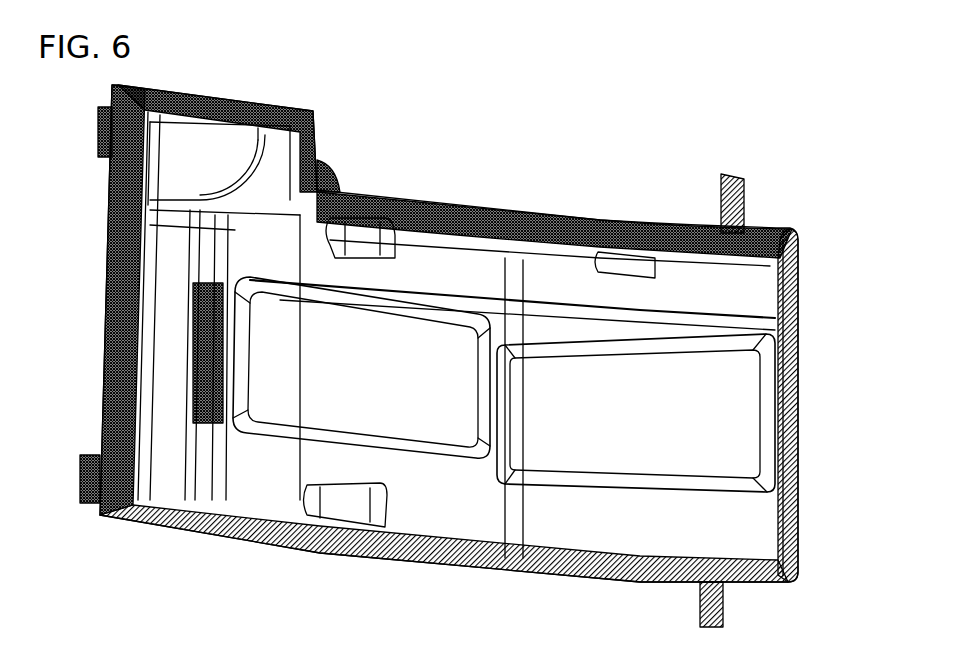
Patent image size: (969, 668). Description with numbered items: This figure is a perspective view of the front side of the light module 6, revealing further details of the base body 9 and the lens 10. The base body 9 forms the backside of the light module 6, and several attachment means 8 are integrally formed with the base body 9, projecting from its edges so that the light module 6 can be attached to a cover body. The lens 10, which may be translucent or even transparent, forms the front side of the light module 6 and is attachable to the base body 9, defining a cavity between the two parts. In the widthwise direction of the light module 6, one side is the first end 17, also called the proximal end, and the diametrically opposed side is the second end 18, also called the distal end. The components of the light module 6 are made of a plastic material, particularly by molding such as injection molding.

The light module 6 is at (462, 366).
The attachment means 8 is at (98, 127).
The base body 9 is at (443, 207).
The lens 10 is at (417, 392).
The first end 17 is at (97, 289).
The second end 18 is at (833, 351).